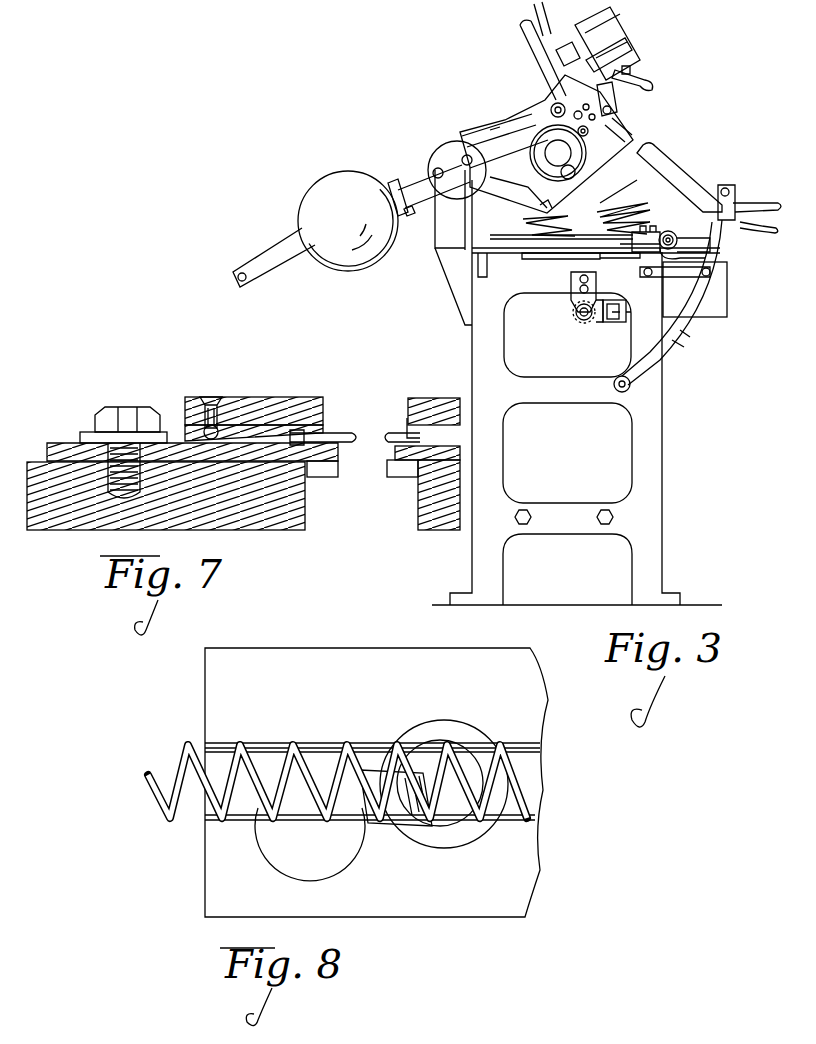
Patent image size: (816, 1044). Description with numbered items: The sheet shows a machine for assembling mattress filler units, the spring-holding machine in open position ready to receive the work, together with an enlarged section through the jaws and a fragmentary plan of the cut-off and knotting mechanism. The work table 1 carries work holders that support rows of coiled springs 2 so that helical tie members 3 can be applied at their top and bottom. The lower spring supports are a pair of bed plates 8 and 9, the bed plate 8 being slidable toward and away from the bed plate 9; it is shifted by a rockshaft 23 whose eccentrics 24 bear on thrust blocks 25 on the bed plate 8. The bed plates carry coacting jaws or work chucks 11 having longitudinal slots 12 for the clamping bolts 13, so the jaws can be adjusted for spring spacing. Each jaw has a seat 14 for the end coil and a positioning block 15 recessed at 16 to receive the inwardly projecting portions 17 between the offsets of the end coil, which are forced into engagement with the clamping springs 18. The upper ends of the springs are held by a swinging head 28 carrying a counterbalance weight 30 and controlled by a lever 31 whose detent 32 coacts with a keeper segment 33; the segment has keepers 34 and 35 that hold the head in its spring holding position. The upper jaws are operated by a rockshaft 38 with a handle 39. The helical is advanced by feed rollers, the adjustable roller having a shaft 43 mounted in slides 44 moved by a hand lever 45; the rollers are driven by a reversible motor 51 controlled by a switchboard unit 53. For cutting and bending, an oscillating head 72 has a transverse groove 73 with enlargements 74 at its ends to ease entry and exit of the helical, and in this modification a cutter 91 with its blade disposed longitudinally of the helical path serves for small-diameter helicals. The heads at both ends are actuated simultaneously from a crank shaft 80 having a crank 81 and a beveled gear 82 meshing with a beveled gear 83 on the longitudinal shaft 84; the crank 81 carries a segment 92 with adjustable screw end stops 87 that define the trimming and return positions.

In FIG. 3, the work table 1 is at (663, 437).
In FIG. 3, the coiled springs 2 is at (523, 220).
In FIG. 8, the helical tie members 3 is at (522, 793).
In FIG. 3, the bed plate 8 is at (617, 254).
In FIG. 7, the bed plate 8 is at (437, 400).
In FIG. 3, the bed plate 9 is at (558, 257).
In FIG. 7, the bed plate 9 is at (278, 524).
In FIG. 7, the jaws or work chucks 11 is at (57, 445).
In FIG. 7, the longitudinal slots 12 is at (95, 440).
In FIG. 7, the clamping bolts 13 is at (112, 415).
In FIG. 7, the seats 14 is at (330, 470).
In FIG. 7, the positioning blocks 15 is at (190, 398).
In FIG. 7, the recess 16 is at (186, 418).
In FIG. 7, the inwardly projecting portions 17 is at (297, 418).
In FIG. 7, the clamping springs 18 is at (325, 430).
In FIG. 3, the rockshaft 23 is at (672, 230).
In FIG. 3, the eccentrics 24 is at (664, 236).
In FIG. 3, the thrust blocks 25 is at (686, 240).
In FIG. 3, the swinging head 28 is at (510, 122).
In FIG. 3, the counterbalance weight 30 is at (343, 185).
In FIG. 3, the lever 31 is at (673, 156).
In FIG. 3, the detent 32 is at (752, 222).
In FIG. 3, the keeper segment 33 is at (722, 240).
In FIG. 3, the keeper 34 is at (648, 375).
In FIG. 3, the keeper 35 is at (685, 335).
In FIG. 3, the rockshaft 38 is at (551, 106).
In FIG. 3, the handle 39 is at (547, 14).
In FIG. 3, the shaft 43 is at (625, 128).
In FIG. 3, the slides 44 is at (614, 108).
In FIG. 3, the hand lever 45 is at (524, 42).
In FIG. 3, the reversible motor 51 is at (540, 155).
In FIG. 3, the switchboard unit 53 is at (470, 139).
In FIG. 8, the oscillating head 72 is at (463, 847).
In FIG. 8, the transverse groove 73 is at (475, 833).
In FIG. 8, the enlargements 74 is at (437, 748).
In FIG. 3, the crank shaft 80 is at (622, 322).
In FIG. 3, the crank 81 is at (606, 55).
In FIG. 3, the beveled gear 82 is at (560, 52).
In FIG. 3, the beveled gear 83 is at (579, 317).
In FIG. 3, the shaft 84 is at (582, 323).
In FIG. 3, the adjustable end stops 87 is at (618, 70).
In FIG. 8, the cutter 91 is at (398, 813).
In FIG. 3, the segment 92 is at (598, 46).